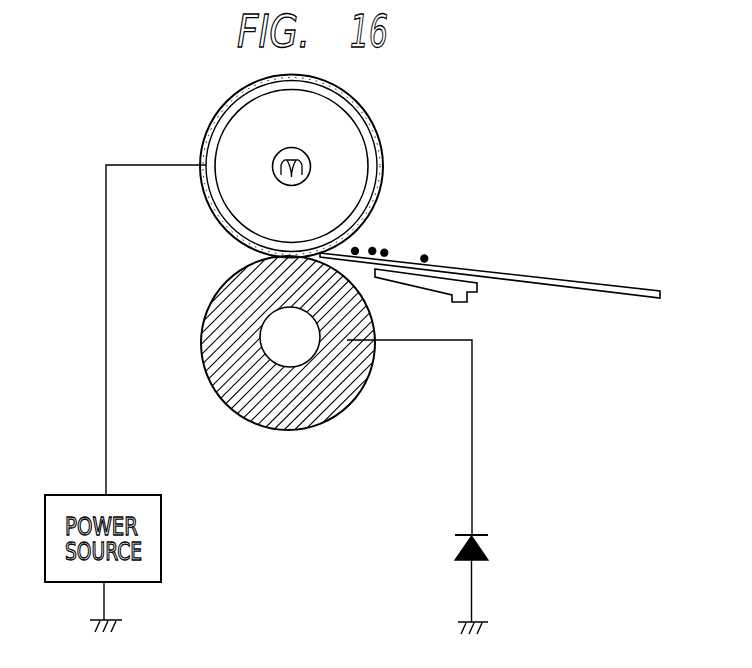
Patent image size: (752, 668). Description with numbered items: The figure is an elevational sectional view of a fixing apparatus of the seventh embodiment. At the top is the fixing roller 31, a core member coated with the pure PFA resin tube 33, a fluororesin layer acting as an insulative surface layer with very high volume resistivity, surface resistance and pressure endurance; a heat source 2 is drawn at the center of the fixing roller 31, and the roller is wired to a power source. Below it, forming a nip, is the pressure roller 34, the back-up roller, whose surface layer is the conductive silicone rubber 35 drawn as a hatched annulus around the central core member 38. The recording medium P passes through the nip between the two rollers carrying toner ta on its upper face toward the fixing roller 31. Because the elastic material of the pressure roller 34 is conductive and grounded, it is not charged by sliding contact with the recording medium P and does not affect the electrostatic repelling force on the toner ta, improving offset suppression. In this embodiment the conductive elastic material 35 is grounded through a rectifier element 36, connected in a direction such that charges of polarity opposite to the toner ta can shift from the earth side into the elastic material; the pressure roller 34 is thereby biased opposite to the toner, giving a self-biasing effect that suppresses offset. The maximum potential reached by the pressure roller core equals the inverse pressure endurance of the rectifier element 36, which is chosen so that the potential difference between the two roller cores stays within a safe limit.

The fixing roller 31 is at (208, 114).
The pure PFA resin tube 33 is at (376, 123).
The heater lamp 2 is at (311, 165).
The pressure roller 34 is at (385, 389).
The conductive silicone rubber 35 is at (335, 402).
The core of pressure roller 38 is at (265, 327).
The rectifier element 36 is at (482, 547).
The recording sheet P is at (548, 277).
The toner ta is at (386, 250).